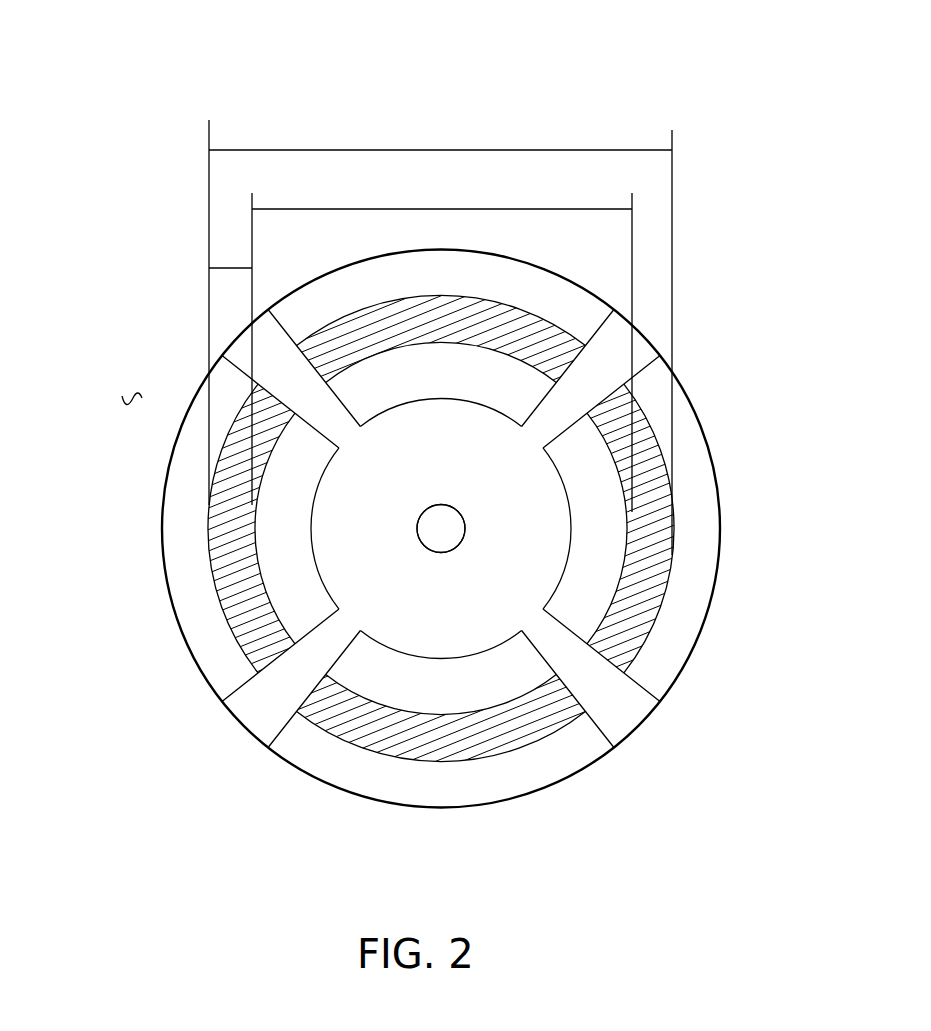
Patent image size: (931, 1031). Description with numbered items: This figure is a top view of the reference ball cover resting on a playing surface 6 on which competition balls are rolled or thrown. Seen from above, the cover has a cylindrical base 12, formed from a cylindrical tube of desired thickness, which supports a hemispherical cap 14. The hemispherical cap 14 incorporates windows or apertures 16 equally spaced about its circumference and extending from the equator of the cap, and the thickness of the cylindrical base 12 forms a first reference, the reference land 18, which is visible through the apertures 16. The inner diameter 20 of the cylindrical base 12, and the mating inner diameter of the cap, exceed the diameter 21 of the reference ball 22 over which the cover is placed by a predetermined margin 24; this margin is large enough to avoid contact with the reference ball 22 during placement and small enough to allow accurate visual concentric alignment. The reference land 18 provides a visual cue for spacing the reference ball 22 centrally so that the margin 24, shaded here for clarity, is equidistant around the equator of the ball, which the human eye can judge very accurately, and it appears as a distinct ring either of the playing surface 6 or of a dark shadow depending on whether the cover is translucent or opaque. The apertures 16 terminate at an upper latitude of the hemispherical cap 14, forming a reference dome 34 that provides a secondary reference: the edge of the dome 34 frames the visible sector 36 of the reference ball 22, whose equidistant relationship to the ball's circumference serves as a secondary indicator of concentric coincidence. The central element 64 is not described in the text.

The playing surface 6 is at (135, 396).
The cylindrical base 12 is at (195, 663).
The hemispherical cap 14 is at (612, 695).
The apertures 16 is at (390, 707).
The reference land 18 is at (332, 757).
The inner diameter 20 is at (420, 150).
The diameter 21 is at (450, 208).
The reference ball 22 is at (480, 708).
The margin 24 is at (231, 265).
The reference dome 34 is at (511, 506).
The visible sector 36 is at (593, 515).
The central bore 64 is at (440, 530).